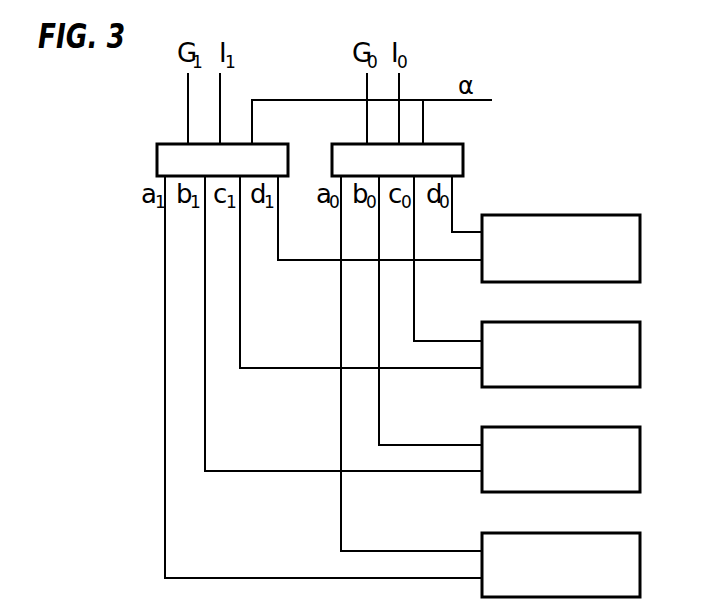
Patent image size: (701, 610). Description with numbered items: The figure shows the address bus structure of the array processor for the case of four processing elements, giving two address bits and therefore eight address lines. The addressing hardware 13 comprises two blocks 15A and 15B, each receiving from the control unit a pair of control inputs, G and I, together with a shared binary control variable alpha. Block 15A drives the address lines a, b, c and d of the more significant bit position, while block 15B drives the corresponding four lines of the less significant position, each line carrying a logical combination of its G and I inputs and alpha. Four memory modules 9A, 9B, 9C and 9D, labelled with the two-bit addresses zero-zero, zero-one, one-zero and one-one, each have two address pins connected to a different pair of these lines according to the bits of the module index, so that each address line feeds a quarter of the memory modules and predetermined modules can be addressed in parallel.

The addressing hardware 13 is at (153, 160).
The block 15A is at (272, 143).
The block 15B is at (443, 143).
The memory module 9A is at (580, 215).
The memory module 9B is at (580, 322).
The memory module 9C is at (580, 427).
The memory module 9D is at (580, 533).